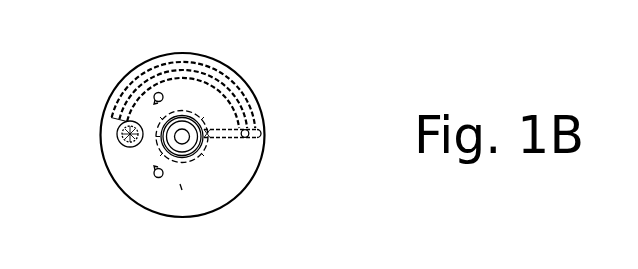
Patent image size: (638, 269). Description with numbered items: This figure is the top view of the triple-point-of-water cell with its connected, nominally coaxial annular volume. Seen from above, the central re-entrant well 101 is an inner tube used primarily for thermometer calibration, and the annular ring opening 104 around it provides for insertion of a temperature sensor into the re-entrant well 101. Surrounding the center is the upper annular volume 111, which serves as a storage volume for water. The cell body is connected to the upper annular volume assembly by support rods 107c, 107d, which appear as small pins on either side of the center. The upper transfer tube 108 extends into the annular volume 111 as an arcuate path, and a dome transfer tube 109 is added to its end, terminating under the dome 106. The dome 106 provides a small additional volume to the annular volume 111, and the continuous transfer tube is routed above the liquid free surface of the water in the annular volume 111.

The re-entrant well 101 is at (179, 130).
The annular ring opening 104 is at (203, 148).
The dome 106 is at (115, 158).
The support rod 107c is at (157, 177).
The support rod 107d is at (157, 92).
The upper transfer tube 108 is at (240, 101).
The dome transfer tube 109 is at (118, 124).
The annular volume 111 is at (181, 186).